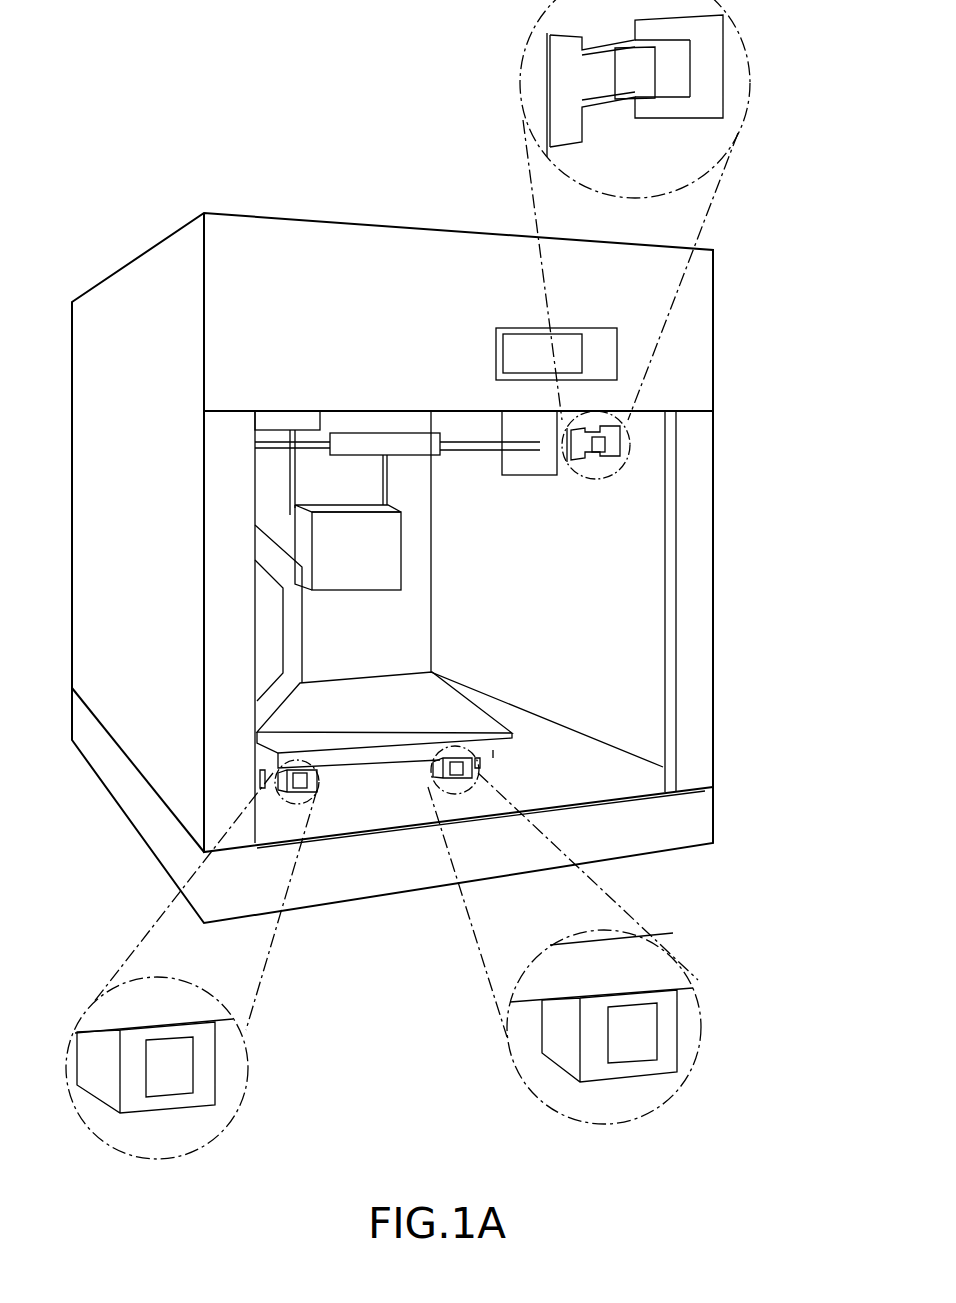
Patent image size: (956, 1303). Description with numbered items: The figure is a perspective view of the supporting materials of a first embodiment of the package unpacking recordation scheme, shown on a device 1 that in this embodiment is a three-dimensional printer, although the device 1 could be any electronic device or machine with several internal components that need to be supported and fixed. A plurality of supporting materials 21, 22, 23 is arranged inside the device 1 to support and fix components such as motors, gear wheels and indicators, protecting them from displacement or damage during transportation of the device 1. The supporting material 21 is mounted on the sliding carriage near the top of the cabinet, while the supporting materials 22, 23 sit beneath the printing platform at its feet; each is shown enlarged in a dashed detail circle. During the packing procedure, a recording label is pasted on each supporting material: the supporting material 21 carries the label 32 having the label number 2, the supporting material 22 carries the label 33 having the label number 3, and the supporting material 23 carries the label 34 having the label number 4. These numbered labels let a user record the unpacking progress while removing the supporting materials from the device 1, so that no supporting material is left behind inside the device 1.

The device 1 is at (312, 253).
The label number 2 is at (635, 73).
The label number 3 is at (632, 1033).
The label number 4 is at (169, 1067).
The supporting material 21 is at (673, 239).
The supporting material 22 is at (609, 935).
The supporting material 23 is at (226, 959).
The label 32 is at (711, 64).
The label 33 is at (699, 1033).
The label 34 is at (236, 1067).